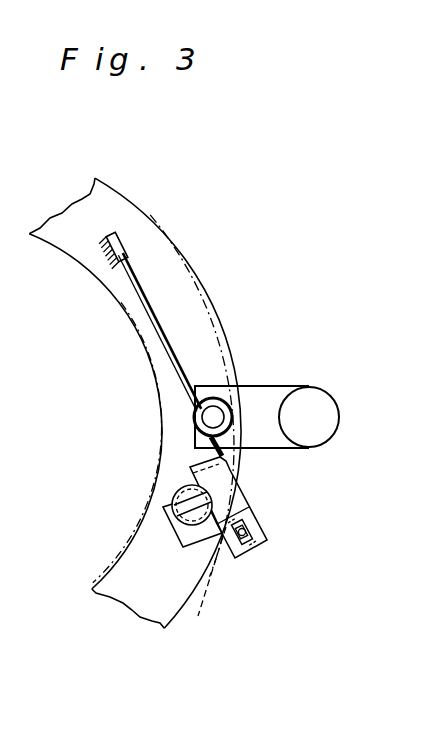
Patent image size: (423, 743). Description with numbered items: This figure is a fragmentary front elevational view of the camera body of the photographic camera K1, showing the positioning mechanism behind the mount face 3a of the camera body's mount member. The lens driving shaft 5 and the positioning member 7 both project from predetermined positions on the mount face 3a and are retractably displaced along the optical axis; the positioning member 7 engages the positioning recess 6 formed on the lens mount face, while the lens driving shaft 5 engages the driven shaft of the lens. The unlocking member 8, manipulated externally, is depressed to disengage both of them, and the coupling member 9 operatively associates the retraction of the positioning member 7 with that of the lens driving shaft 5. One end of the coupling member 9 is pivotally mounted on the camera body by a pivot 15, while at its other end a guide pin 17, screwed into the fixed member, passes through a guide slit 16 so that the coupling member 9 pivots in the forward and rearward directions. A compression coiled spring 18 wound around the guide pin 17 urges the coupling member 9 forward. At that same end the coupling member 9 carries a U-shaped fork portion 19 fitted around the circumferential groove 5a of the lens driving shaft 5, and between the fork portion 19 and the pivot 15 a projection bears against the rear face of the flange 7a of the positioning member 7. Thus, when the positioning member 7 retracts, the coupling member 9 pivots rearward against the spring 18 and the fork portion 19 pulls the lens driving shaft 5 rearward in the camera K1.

The mount face 3a is at (178, 267).
The lens driving shaft 5 is at (160, 497).
The circumferential groove 5a is at (178, 485).
The positioning recess 6 is at (422, 213).
The positioning member 7 is at (214, 386).
The flange 7a is at (232, 415).
The unlocking member 8 is at (316, 410).
The coupling member 9 is at (161, 319).
The pivot 15 is at (117, 239).
The guide slit 16 is at (252, 520).
The guide pin 17 is at (252, 548).
The compression coiled spring 18 is at (205, 588).
The fork portion 19 is at (182, 523).
The photographic camera K1 is at (331, 465).